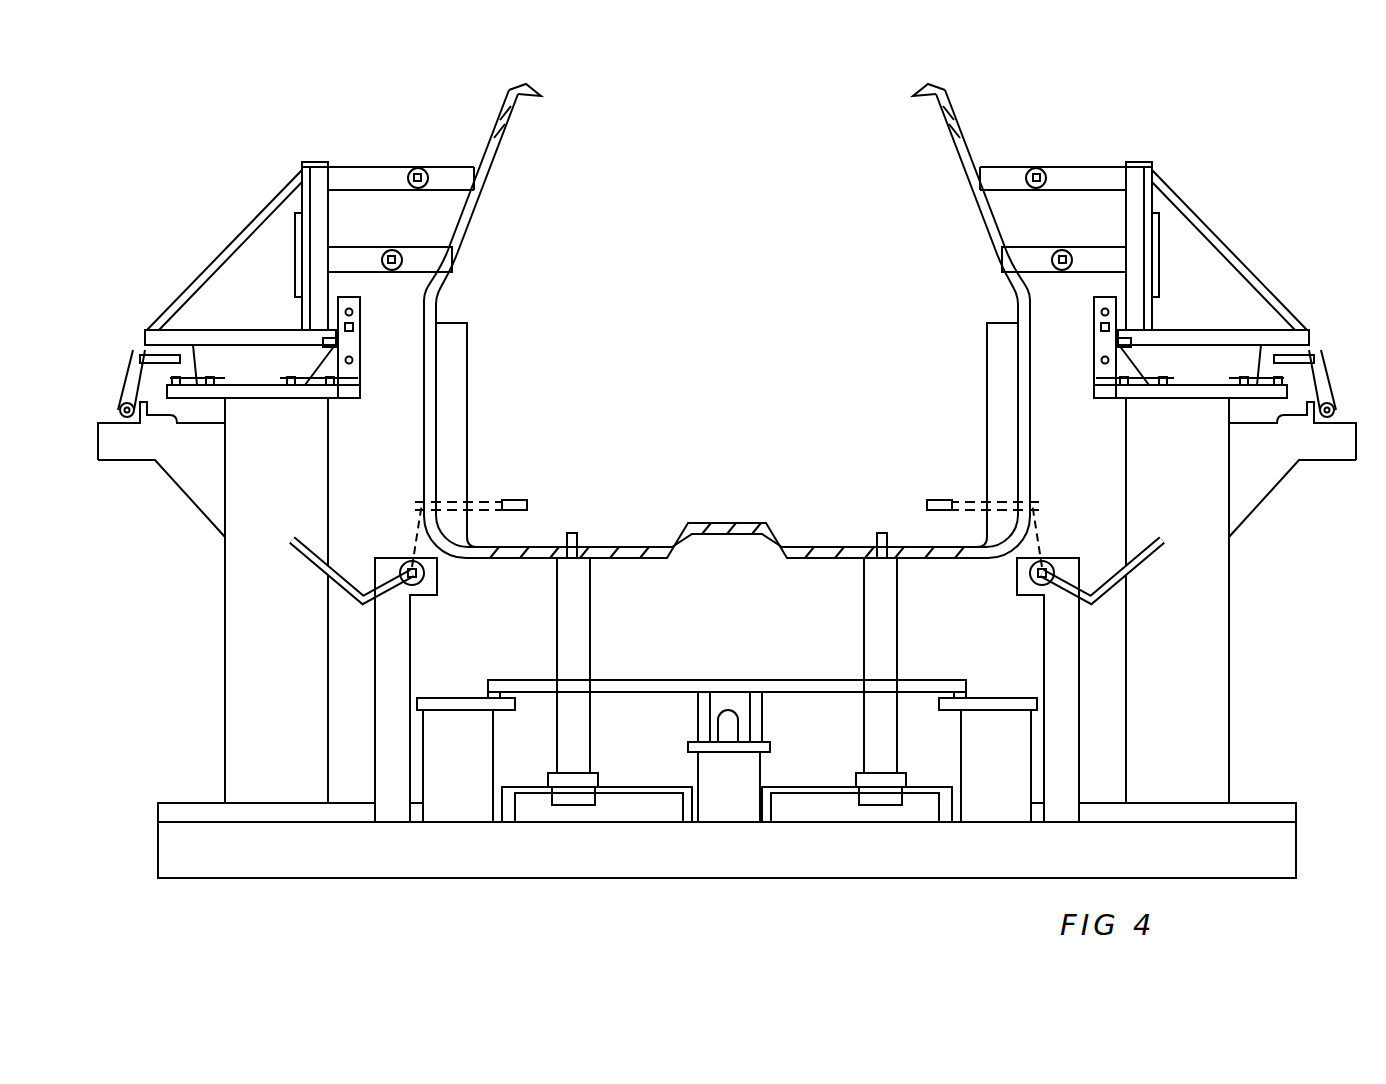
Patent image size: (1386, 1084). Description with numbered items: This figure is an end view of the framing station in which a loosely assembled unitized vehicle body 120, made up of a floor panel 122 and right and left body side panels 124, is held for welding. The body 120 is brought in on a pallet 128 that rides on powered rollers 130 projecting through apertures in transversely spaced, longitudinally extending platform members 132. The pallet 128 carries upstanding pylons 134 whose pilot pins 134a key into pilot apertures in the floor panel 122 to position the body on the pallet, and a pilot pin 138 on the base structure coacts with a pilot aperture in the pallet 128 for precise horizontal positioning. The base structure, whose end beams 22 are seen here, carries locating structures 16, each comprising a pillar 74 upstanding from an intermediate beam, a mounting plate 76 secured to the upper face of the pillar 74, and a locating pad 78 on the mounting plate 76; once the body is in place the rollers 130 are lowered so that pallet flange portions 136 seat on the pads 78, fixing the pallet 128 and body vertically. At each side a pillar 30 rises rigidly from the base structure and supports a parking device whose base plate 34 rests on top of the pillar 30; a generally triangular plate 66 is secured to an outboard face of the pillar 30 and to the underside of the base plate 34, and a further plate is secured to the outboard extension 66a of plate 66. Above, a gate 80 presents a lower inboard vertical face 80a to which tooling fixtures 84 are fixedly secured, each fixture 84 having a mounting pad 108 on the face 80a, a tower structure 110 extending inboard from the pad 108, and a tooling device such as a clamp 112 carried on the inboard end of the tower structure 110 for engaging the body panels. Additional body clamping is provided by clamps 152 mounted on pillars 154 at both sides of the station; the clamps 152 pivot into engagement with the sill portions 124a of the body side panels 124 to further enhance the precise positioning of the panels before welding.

The locating structure 16 is at (450, 806).
The end beam 22 is at (200, 858).
The pillar 30 is at (237, 632).
The base plate 34 is at (260, 402).
The plate 66 is at (163, 450).
The outboard extension 66a is at (1305, 450).
The pillar 74 is at (475, 757).
The mounting plate 76 is at (438, 700).
The locating pad 78 is at (495, 680).
The gate 80 is at (1210, 219).
The inboard vertical face 80a is at (1125, 213).
The tooling fixture 84 is at (1080, 198).
The mounting pad 108 is at (1127, 160).
The tower structure 110 is at (1067, 275).
The clamp 112 is at (985, 162).
The unitized vehicle body 120 is at (519, 153).
The floor panel 122 is at (633, 560).
The body side panel 124 is at (465, 323).
The sill portion 124a is at (1042, 540).
The pallet 128 is at (805, 678).
The powered roller 130 is at (568, 812).
The platform member 132 is at (632, 785).
The pylon 134 is at (593, 655).
The pilot pin 134a is at (575, 533).
The pallet flange portion 136 is at (915, 680).
The pilot pin 138 is at (736, 716).
The clamp 152 is at (515, 490).
The pillar 154 is at (1070, 705).